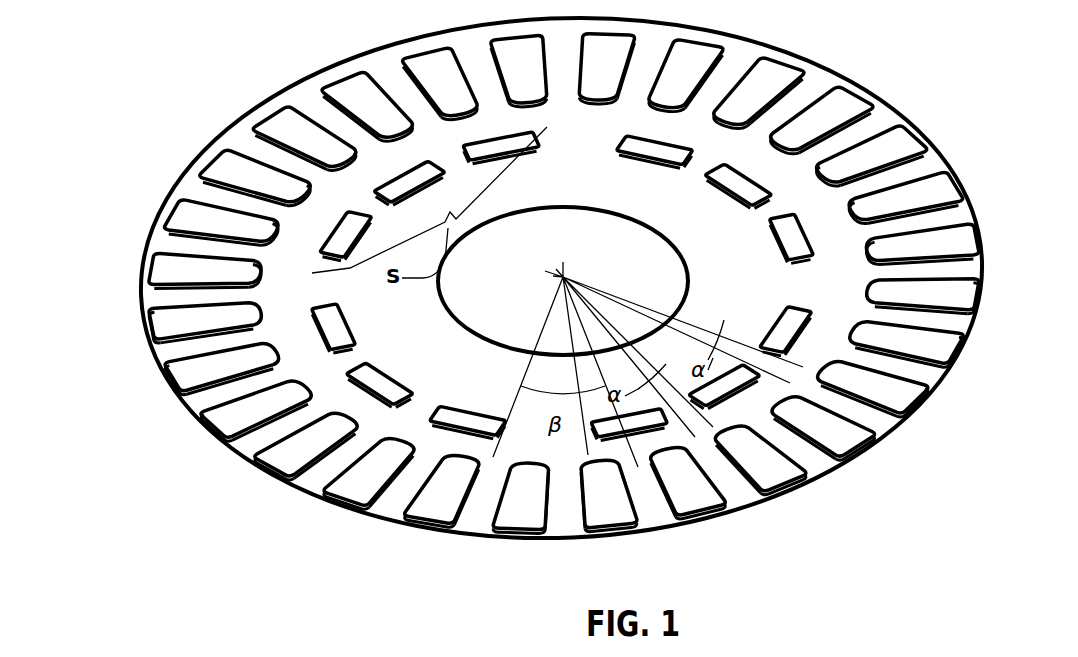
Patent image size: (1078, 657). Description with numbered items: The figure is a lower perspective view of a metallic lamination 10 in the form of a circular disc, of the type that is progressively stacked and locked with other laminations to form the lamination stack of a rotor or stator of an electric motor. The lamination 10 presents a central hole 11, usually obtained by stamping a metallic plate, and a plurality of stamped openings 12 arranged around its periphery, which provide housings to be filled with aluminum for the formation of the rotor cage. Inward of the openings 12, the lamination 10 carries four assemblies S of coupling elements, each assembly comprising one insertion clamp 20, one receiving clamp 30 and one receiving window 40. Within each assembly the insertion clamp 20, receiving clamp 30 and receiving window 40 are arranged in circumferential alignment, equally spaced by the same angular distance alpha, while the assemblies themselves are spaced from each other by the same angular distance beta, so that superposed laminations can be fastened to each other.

The lamination 10 is at (175, 183).
The central hole 11 is at (497, 334).
The openings 12 is at (940, 247).
The insertion clamp 20 is at (652, 163).
The receiving clamp 30 is at (737, 190).
The receiving window 40 is at (806, 236).